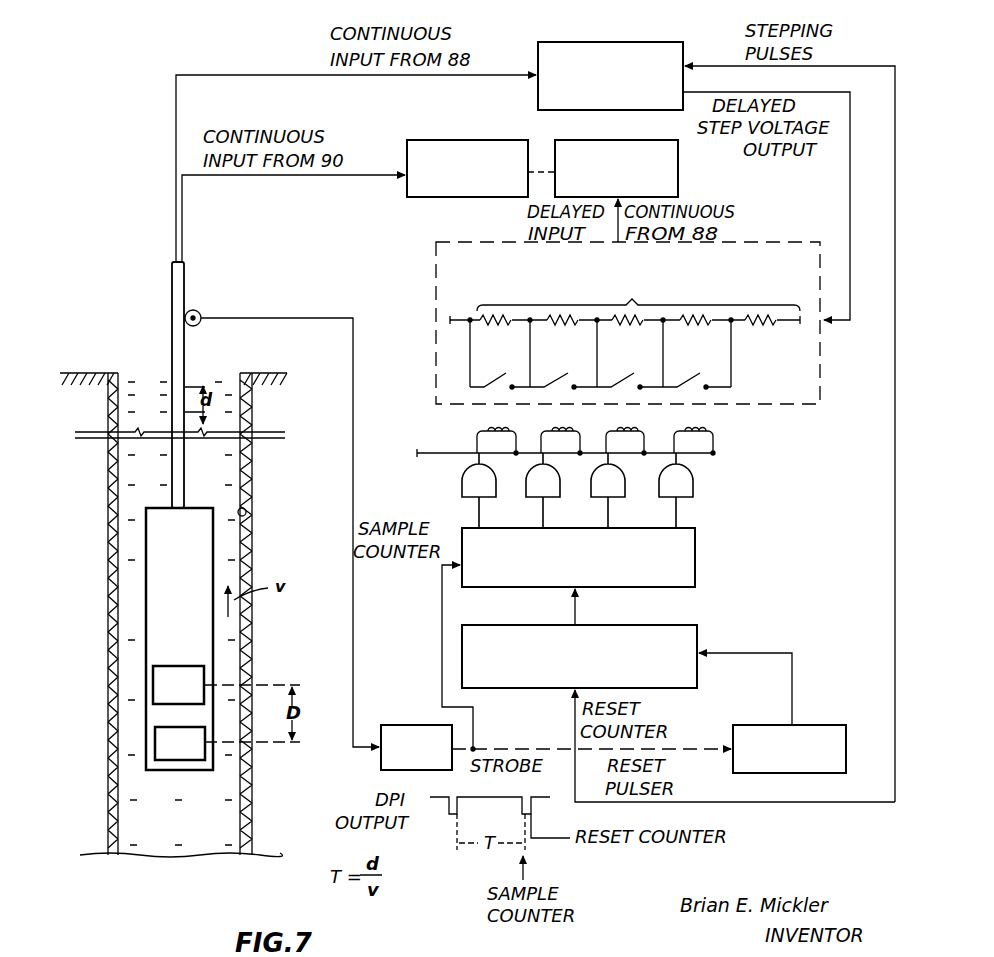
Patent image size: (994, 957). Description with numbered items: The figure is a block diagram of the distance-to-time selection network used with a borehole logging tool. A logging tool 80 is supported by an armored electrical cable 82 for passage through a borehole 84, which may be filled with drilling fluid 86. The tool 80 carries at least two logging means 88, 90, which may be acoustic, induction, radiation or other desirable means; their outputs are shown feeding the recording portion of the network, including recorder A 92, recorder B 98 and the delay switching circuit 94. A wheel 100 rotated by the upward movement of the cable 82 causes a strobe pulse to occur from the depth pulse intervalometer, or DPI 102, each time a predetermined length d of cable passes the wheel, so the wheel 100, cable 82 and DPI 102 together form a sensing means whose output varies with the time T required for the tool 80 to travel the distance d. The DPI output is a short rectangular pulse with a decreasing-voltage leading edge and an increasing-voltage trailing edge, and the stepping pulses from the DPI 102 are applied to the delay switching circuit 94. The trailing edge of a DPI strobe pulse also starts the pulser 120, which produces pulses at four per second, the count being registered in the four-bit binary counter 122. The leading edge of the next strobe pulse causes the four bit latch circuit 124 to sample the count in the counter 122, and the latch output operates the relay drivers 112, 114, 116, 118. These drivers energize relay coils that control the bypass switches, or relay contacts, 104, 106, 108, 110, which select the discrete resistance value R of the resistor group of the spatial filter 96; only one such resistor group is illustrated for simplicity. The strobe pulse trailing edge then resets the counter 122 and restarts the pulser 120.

The logging tool 80 is at (179, 639).
The armored electrical cable 82 is at (172, 330).
The borehole 84 is at (246, 508).
The drilling fluid 86 is at (128, 556).
The logging means 88 is at (160, 688).
The logging means 90 is at (160, 745).
The recorder A 92 is at (446, 140).
The delay switching circuit 94 is at (629, 42).
The spatial filter 96 is at (628, 302).
The recorder B 98 is at (678, 163).
The wheel 100 is at (199, 312).
The depth pulse intervalometer (DPI) 102 is at (408, 725).
The bypass switch 104 is at (498, 378).
The bypass switch 106 is at (561, 378).
The bypass switch 108 is at (627, 378).
The bypass switch 110 is at (695, 378).
The relay driver 112 is at (484, 498).
The relay driver 114 is at (549, 498).
The relay driver 116 is at (616, 498).
The relay driver 118 is at (684, 498).
The pulser 120 is at (826, 725).
The four-bit binary counter 122 is at (699, 641).
The four bit latch circuit 124 is at (697, 576).